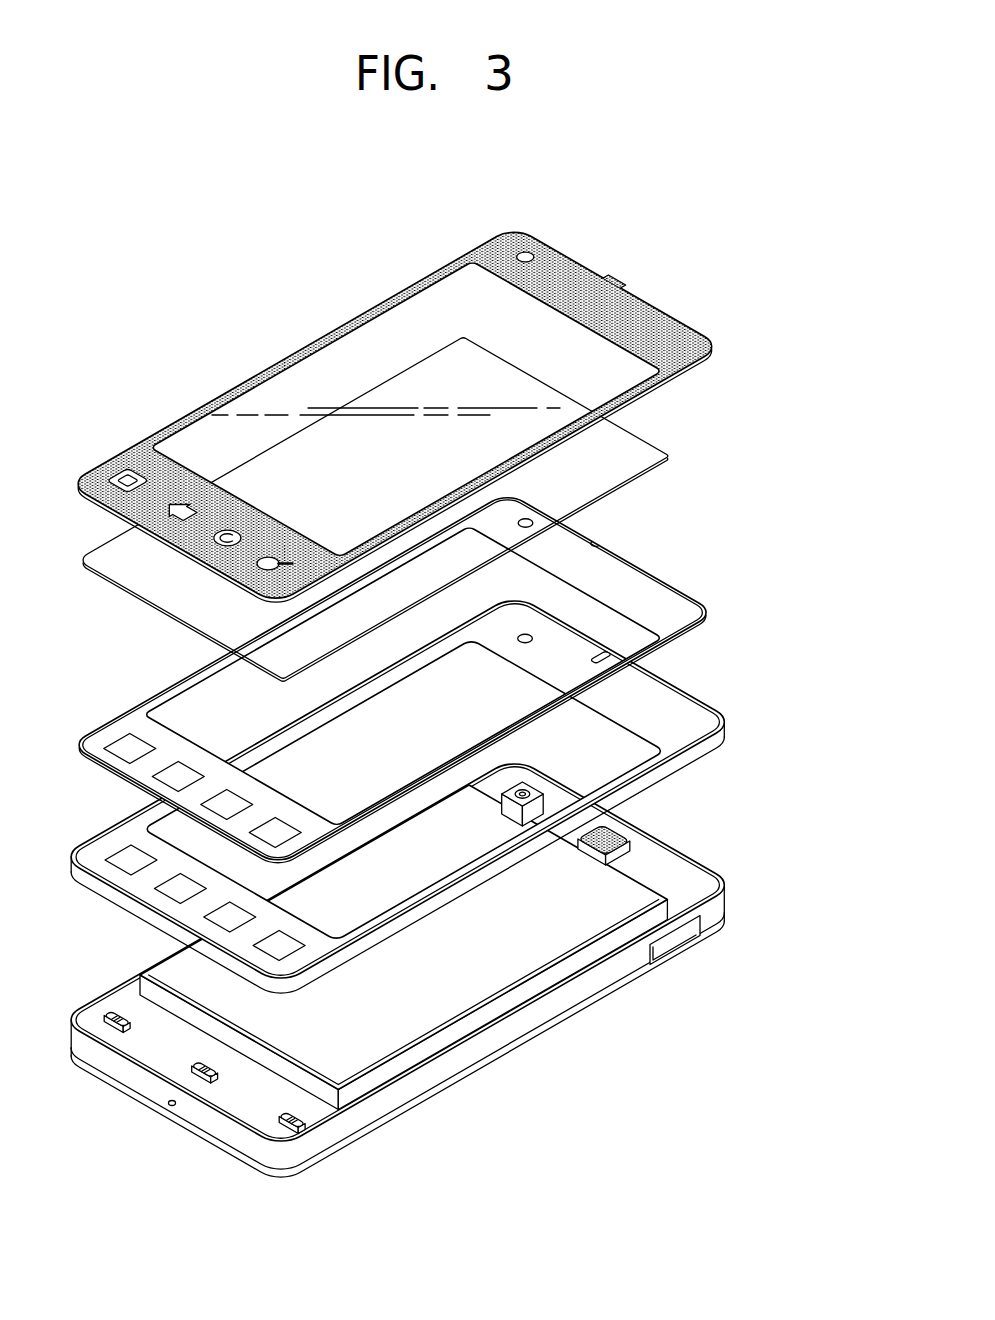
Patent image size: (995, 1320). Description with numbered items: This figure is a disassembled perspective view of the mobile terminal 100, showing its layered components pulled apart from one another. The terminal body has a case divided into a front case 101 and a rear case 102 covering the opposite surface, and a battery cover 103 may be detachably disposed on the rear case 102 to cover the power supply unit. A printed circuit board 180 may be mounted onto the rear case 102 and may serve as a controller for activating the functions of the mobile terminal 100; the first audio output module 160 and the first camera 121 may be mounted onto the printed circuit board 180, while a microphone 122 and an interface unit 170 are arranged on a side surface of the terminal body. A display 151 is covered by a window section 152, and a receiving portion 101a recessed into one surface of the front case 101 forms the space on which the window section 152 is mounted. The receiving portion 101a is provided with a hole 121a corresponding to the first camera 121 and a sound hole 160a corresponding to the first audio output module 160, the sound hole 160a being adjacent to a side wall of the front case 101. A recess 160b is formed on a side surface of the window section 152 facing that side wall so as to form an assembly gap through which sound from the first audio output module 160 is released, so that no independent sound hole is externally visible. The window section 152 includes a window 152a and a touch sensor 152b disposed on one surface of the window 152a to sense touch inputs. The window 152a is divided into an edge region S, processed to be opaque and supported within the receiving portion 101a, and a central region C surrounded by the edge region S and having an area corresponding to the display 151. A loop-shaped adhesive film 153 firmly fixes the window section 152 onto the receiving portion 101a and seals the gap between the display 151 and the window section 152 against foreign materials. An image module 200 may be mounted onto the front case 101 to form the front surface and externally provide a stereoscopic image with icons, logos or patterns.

The mobile terminal 100 is at (238, 353).
The front case 101 is at (429, 760).
The receiving portion 101a is at (415, 753).
The rear case 102 is at (431, 962).
The battery cover 103 is at (713, 940).
The first camera 121 is at (532, 797).
The hole 121a is at (530, 633).
The microphone 122 is at (170, 1105).
The display 151 is at (415, 1020).
The window section 152 is at (463, 506).
The window 152a is at (707, 346).
The touch sensor 152b is at (643, 450).
The adhesive film 153 is at (598, 558).
The first audio output module 160 is at (613, 837).
The sound hole 160a is at (604, 660).
The recess 160b is at (612, 288).
The interface unit 170 is at (673, 947).
The printed circuit board 180 is at (682, 880).
The image module 200 is at (407, 401).
The central region C is at (363, 330).
The edge region S is at (487, 245).